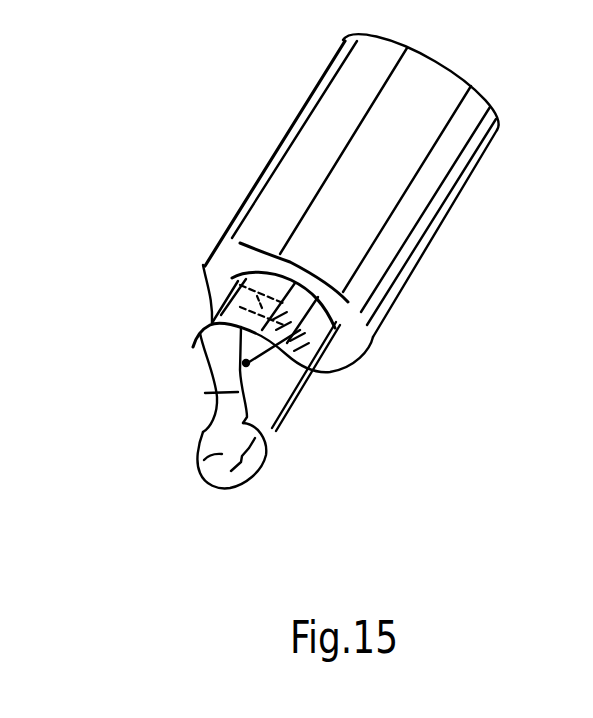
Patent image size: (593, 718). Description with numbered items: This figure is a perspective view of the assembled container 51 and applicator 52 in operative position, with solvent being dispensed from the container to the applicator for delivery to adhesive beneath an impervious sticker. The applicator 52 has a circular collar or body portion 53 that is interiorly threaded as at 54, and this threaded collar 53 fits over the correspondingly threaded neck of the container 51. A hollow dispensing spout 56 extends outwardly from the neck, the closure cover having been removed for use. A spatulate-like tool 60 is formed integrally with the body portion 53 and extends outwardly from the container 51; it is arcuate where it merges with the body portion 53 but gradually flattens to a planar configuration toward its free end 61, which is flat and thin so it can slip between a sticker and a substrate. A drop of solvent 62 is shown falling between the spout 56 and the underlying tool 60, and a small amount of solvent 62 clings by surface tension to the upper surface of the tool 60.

The container 51 is at (312, 160).
The applicator 52 is at (168, 373).
The collar or body portion 53 is at (300, 357).
The interior threads 54 is at (250, 287).
The hollow dispensing spout 56 is at (243, 346).
The spatulate-like tool 60 is at (265, 418).
The free end 61 is at (232, 487).
The solvent 62 is at (205, 393).